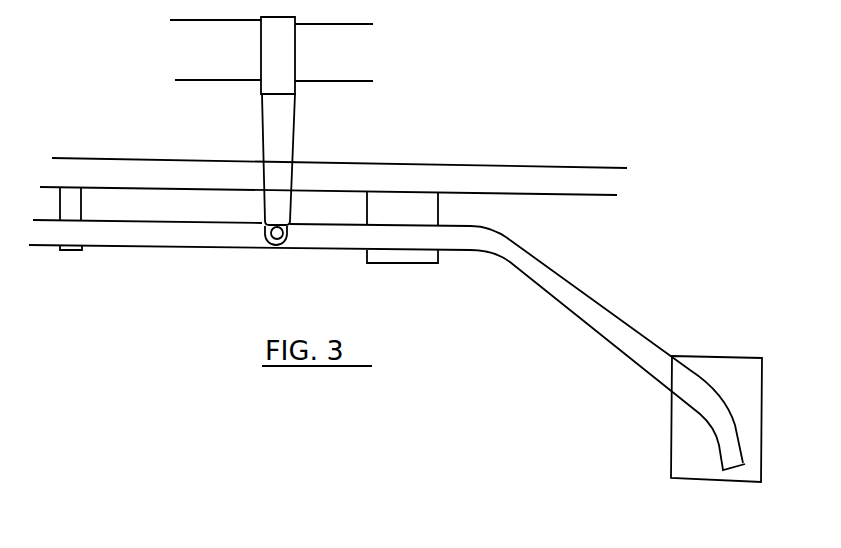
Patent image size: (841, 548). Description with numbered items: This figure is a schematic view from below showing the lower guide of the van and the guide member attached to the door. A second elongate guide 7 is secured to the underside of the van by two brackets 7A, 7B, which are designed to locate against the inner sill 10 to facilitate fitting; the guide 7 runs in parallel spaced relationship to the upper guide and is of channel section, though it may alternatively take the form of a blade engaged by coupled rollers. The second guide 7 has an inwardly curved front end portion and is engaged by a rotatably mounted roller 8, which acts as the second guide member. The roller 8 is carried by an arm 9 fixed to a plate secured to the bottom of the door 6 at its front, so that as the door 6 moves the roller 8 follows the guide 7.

The door 6 is at (347, 66).
The second elongate guide 7 is at (205, 237).
The bracket 7A is at (413, 263).
The bracket 7B is at (82, 249).
The roller 8 is at (287, 242).
The arm 9 is at (295, 117).
The inner sill 10 is at (505, 195).